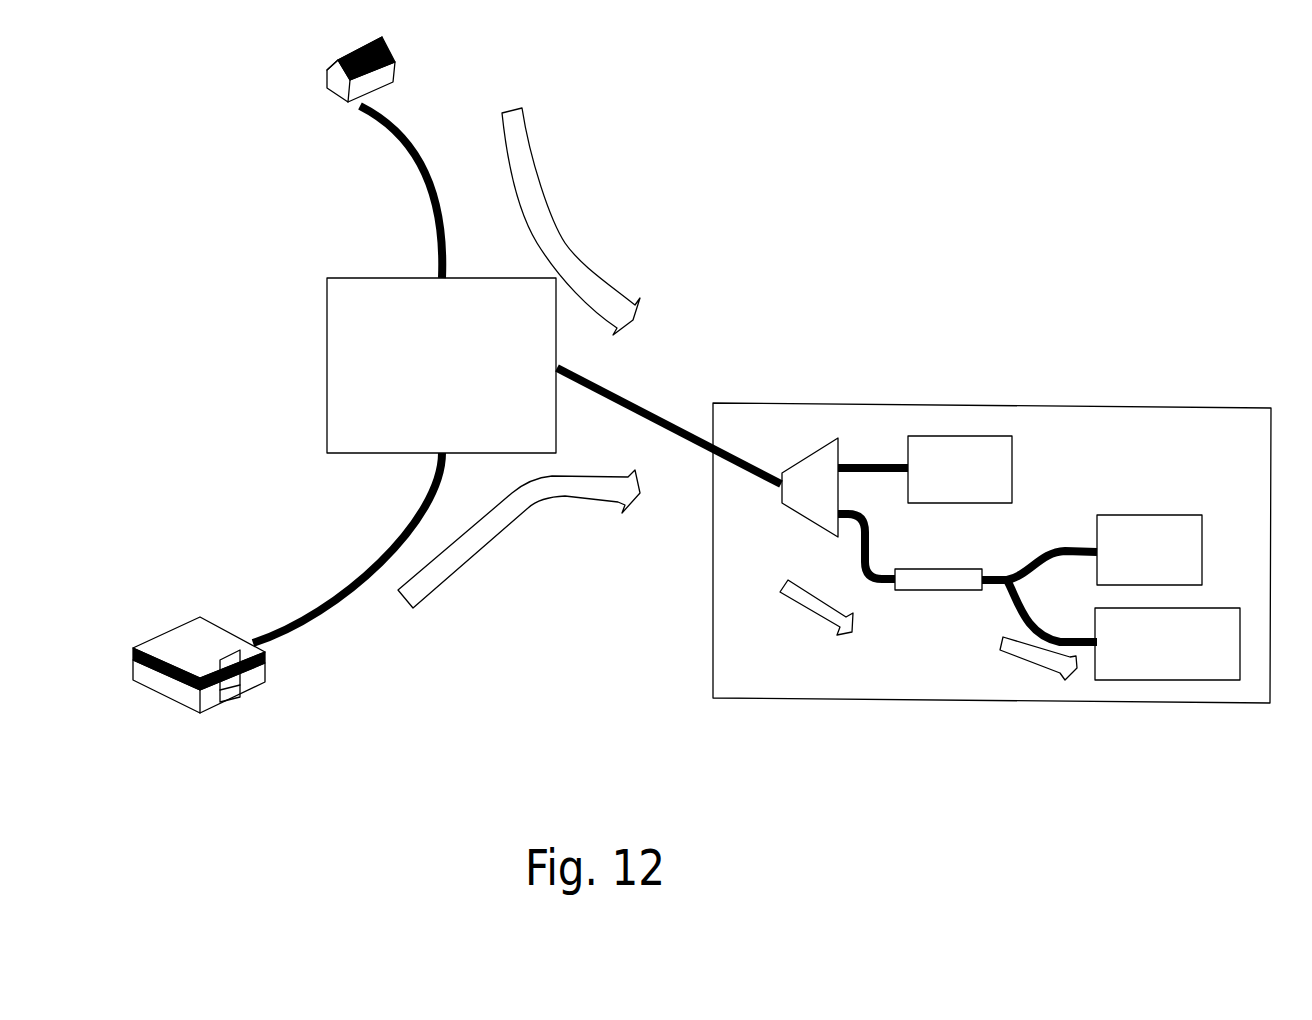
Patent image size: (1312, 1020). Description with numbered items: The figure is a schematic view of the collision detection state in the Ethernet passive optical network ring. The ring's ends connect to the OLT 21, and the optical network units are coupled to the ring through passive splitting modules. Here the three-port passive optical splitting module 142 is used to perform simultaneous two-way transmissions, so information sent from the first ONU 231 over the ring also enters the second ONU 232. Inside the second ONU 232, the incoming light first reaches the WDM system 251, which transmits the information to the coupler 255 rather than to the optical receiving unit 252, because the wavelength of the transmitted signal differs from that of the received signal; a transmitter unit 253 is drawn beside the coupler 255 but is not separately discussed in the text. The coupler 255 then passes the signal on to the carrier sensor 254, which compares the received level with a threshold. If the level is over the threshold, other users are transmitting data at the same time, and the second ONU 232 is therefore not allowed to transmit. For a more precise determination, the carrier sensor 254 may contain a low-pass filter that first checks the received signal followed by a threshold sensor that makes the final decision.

The OLT 21 is at (243, 683).
The three-port passive optical splitting module 142 is at (322, 330).
The first ONU 231 is at (333, 92).
The second ONU 232 is at (1175, 407).
The WDM system 251 is at (843, 440).
The optical receiving unit 252 is at (968, 428).
The transmitter (Tx) 253 is at (1117, 508).
The carrier sensor 254 is at (1160, 682).
The coupler 255 is at (943, 590).